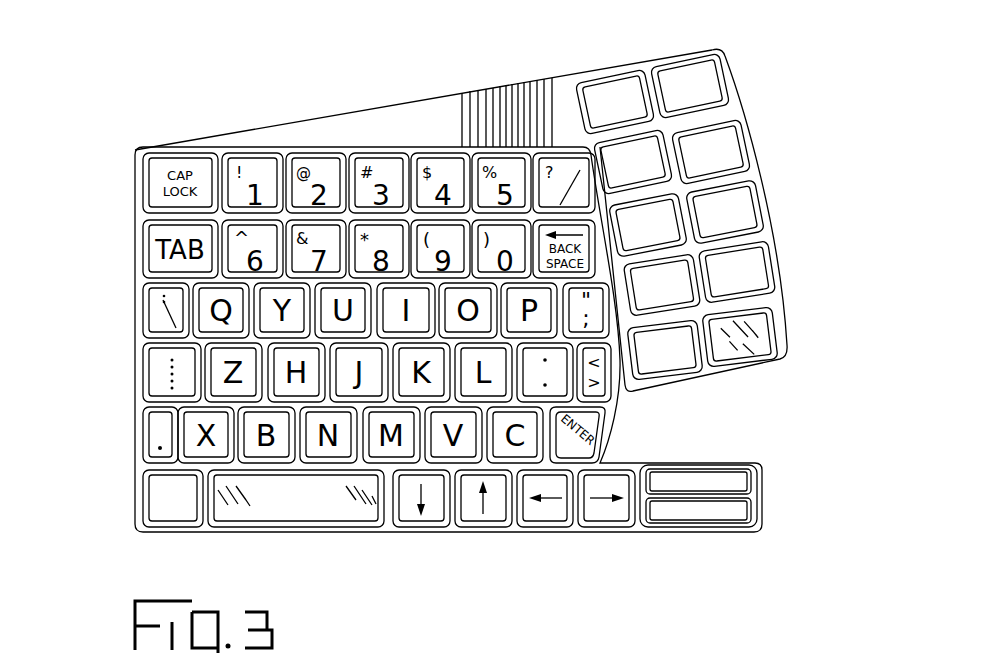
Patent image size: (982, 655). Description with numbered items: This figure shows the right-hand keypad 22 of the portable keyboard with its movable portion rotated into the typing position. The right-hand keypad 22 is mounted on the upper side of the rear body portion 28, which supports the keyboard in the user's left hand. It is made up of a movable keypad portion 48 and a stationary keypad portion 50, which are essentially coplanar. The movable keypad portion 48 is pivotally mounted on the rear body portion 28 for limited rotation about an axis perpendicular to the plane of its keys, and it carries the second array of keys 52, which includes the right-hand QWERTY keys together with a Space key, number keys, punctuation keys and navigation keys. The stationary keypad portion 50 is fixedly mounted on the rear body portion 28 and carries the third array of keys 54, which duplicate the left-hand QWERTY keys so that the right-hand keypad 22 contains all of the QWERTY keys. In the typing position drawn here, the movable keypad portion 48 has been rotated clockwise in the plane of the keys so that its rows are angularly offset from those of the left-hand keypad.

The right-hand keypad 22 is at (133, 303).
The rear body portion 28 is at (364, 108).
The movable keypad portion 48 is at (382, 538).
The stationary keypad portion 50 is at (690, 382).
The second array of keys 52 is at (138, 370).
The third array of keys 54 is at (778, 270).